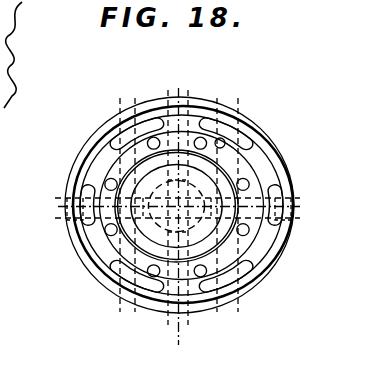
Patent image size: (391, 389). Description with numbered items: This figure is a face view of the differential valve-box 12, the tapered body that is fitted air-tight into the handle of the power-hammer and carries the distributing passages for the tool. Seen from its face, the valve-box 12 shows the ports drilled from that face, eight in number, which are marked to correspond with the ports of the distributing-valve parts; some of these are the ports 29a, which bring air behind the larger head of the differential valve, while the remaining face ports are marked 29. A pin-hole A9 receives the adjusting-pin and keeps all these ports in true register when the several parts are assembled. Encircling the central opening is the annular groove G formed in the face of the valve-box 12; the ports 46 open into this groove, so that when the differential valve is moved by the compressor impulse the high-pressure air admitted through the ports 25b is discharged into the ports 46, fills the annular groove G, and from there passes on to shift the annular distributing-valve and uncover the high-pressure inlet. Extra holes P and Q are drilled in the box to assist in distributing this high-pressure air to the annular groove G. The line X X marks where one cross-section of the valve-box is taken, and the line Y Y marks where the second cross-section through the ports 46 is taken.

The annular groove G is at (103, 148).
The pin-hole A9 is at (245, 128).
The ports 29a is at (102, 181).
The arc slots 29 is at (207, 135).
The differential valve-box 12 is at (107, 251).
The extra hole P is at (133, 100).
The extra hole Q is at (223, 106).
The ports 25b is at (177, 91).
The section line X X is at (190, 204).
The section line Y Y is at (176, 195).
The ports 46 is at (62, 219).